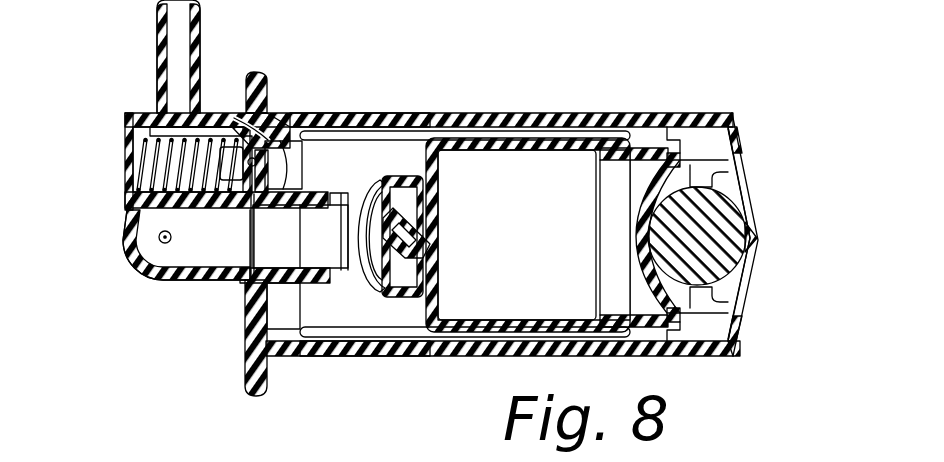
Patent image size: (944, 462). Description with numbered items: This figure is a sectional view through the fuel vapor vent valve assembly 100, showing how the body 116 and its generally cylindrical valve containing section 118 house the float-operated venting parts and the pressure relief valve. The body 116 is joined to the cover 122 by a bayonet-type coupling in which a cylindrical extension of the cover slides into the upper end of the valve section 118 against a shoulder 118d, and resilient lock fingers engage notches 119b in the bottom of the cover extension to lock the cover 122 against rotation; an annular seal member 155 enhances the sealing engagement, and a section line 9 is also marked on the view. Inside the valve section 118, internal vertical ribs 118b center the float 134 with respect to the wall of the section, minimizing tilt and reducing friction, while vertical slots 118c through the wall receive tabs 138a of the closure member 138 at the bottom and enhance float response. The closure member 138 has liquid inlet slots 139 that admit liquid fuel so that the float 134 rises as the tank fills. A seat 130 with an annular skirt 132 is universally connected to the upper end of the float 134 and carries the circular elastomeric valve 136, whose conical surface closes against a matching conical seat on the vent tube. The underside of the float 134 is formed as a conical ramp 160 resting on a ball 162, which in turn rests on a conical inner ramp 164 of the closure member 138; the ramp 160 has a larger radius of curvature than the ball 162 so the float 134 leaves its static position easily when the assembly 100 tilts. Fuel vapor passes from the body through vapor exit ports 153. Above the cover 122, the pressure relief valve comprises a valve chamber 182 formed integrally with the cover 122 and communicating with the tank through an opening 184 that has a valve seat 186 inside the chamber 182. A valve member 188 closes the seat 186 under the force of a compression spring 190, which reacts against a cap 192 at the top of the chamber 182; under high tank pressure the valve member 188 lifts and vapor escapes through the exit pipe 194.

The fuel vapor vent valve assembly 100 is at (114, 137).
The valve body 116 is at (598, 112).
The valve containing section 118 is at (545, 114).
The vertical ribs 118b is at (429, 140).
The vertical slots 118c is at (681, 158).
The shoulder 118d is at (288, 345).
The notches 119b is at (299, 329).
The cover 122 is at (419, 194).
The seat 130 is at (401, 300).
The annular skirt 132 is at (412, 138).
The float 134 is at (497, 140).
The valve 136 is at (378, 300).
The closure member 138 is at (744, 116).
The tabs 138a is at (699, 153).
The liquid inlet slots 139 is at (752, 195).
The vapor exit ports 153 is at (356, 116).
The annular seal member 155 is at (251, 292).
The ramp 160 is at (650, 243).
The ball 162 is at (732, 218).
The ramp 164 is at (739, 273).
The valve chamber 182 is at (152, 132).
The opening 184 is at (327, 205).
The valve seat 186 is at (236, 140).
The valve member 188 is at (240, 208).
The compression spring 190 is at (147, 160).
The cap 192 is at (128, 188).
The exit pipe 194 is at (200, 18).
The joint 9 is at (271, 124).